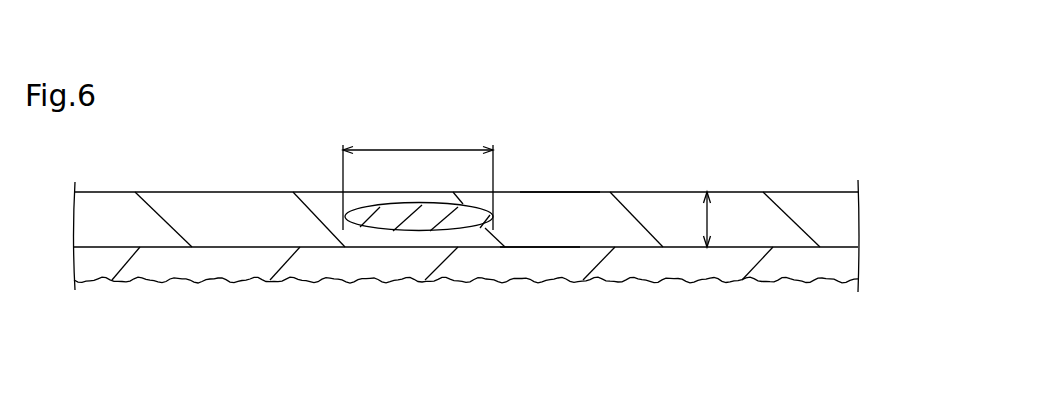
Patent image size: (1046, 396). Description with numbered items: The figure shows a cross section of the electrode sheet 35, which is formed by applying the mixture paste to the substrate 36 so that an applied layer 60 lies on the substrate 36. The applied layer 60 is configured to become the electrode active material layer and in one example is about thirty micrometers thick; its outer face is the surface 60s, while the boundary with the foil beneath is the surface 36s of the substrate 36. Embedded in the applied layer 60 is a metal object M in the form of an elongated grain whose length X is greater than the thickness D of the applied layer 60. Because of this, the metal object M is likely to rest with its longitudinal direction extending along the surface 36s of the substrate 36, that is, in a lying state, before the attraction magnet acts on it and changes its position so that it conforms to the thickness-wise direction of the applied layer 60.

The electrode sheet 35 is at (467, 224).
The applied layer 60 is at (203, 192).
The substrate 36 is at (197, 281).
The surface of the applied layer 60s is at (558, 190).
The surface of the substrate 36s is at (530, 247).
The metal object M is at (378, 231).
The length of the metal object X is at (418, 174).
The thickness of the applied layer D is at (719, 219).